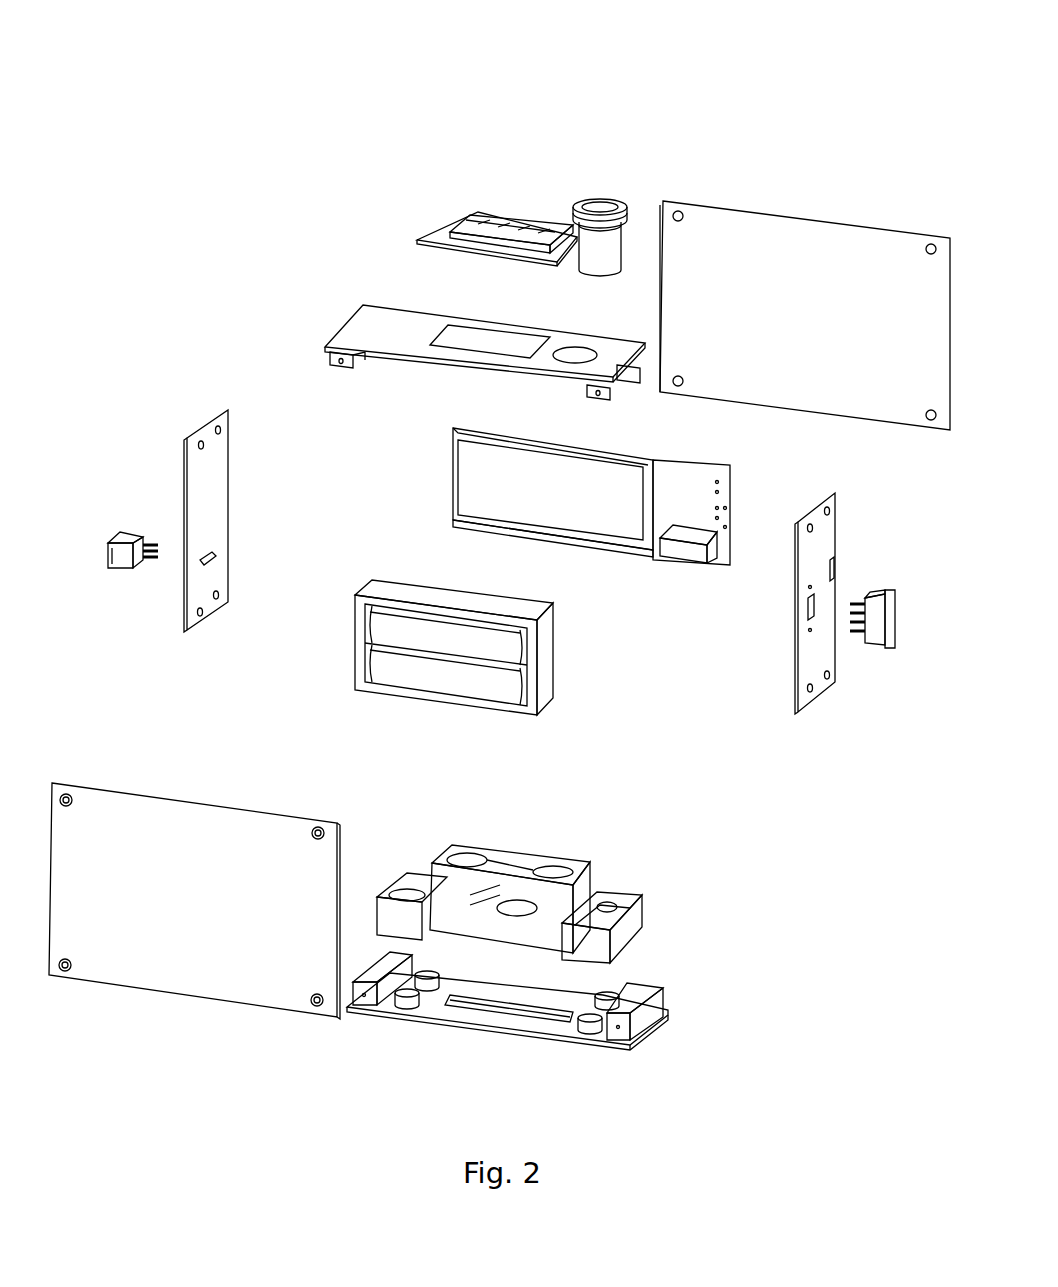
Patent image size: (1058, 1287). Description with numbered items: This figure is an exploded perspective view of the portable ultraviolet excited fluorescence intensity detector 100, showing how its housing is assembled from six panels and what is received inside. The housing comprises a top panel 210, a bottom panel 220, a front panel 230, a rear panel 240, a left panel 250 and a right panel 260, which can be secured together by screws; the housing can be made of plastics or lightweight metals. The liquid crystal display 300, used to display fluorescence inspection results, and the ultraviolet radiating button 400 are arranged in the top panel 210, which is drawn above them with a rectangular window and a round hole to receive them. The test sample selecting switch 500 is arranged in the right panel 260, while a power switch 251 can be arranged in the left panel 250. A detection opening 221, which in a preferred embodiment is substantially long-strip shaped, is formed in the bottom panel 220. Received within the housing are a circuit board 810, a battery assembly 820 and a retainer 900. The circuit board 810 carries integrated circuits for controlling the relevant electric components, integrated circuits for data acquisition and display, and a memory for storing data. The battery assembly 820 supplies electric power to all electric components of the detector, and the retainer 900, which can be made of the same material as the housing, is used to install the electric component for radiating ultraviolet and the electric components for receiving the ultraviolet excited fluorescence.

The portable ultraviolet excited fluorescence intensity detector 100 is at (473, 32).
The top panel 210 is at (485, 352).
The bottom panel 220 is at (428, 1017).
The detection opening 221 is at (515, 1012).
The front panel 230 is at (194, 901).
The rear panel 240 is at (805, 315).
The left panel 250 is at (228, 521).
The power switch 251 is at (117, 542).
The right panel 260 is at (795, 603).
The liquid crystal display 300 is at (452, 218).
The ultraviolet radiating button 400 is at (602, 205).
The test sample selecting switch 500 is at (893, 619).
The circuit board 810 is at (591, 496).
The battery assembly 820 is at (473, 647).
The retainer 900 is at (509, 889).